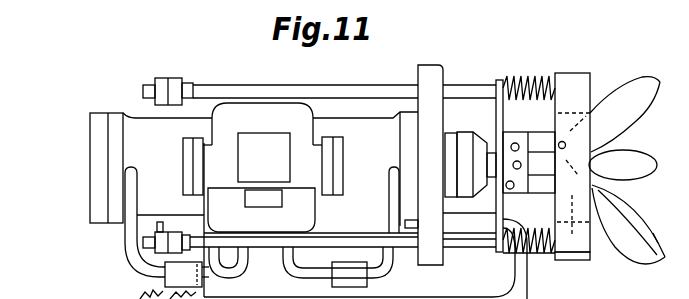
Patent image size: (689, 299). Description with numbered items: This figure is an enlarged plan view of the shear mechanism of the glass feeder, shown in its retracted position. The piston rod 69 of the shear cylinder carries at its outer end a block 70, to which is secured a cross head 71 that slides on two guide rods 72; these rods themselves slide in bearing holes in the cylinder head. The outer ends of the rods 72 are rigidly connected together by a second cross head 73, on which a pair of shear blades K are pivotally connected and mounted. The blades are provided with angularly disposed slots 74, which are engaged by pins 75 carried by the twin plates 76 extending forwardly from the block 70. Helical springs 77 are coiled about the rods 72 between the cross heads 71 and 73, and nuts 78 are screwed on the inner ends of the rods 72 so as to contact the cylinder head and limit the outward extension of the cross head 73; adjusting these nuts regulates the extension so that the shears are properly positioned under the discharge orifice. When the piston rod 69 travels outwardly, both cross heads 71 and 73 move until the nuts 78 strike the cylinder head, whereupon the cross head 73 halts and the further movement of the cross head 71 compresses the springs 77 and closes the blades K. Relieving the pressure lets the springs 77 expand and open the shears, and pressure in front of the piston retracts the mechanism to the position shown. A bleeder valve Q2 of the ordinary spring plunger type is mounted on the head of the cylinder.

The piston rod 69 is at (490, 152).
The block 70 is at (511, 131).
The cross head 71 is at (498, 80).
The guide rods 72 is at (327, 92).
The cross head 73 is at (579, 73).
The angularly disposed slots 74 is at (623, 165).
The pins 75 is at (566, 144).
The twin plates 76 is at (529, 228).
The helical springs 77 is at (543, 254).
The nuts 78 is at (178, 78).
The shear blades K is at (652, 213).
The bleeder valve Q2 is at (472, 223).